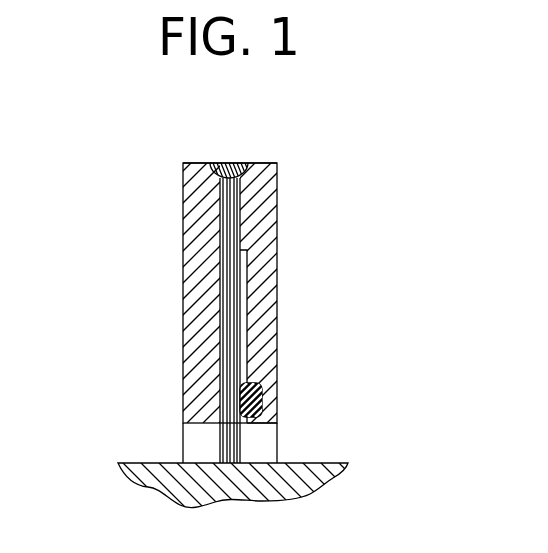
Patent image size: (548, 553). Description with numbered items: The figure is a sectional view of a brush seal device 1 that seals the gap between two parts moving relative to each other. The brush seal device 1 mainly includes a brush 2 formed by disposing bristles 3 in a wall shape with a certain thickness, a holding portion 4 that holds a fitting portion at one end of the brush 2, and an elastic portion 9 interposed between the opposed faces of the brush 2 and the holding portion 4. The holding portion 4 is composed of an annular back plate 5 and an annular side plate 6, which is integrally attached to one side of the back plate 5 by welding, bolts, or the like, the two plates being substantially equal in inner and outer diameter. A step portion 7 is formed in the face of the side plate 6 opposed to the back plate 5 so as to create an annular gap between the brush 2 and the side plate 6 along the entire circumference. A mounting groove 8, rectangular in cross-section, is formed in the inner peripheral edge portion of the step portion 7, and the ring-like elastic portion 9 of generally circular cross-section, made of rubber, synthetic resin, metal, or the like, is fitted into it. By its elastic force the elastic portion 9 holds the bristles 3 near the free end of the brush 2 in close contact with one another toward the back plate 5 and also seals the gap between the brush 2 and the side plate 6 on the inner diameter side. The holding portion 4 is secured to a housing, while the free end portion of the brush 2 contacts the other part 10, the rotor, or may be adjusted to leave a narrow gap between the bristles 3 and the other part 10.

The brush seal device 1 is at (292, 175).
The brush 2 is at (242, 442).
The bristles 3 is at (238, 452).
The holding portion 4 is at (173, 165).
The back plate 5 is at (192, 230).
The side plate 6 is at (260, 212).
The step portion 7 is at (243, 268).
The mounting groove 8 is at (273, 371).
The elastic portion 9 is at (258, 398).
The other part 10 is at (297, 475).